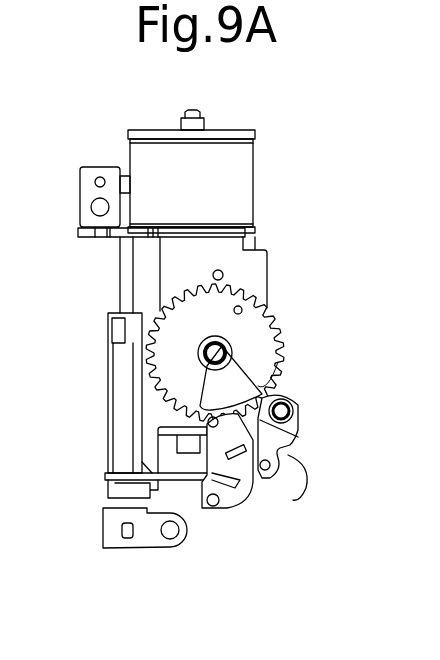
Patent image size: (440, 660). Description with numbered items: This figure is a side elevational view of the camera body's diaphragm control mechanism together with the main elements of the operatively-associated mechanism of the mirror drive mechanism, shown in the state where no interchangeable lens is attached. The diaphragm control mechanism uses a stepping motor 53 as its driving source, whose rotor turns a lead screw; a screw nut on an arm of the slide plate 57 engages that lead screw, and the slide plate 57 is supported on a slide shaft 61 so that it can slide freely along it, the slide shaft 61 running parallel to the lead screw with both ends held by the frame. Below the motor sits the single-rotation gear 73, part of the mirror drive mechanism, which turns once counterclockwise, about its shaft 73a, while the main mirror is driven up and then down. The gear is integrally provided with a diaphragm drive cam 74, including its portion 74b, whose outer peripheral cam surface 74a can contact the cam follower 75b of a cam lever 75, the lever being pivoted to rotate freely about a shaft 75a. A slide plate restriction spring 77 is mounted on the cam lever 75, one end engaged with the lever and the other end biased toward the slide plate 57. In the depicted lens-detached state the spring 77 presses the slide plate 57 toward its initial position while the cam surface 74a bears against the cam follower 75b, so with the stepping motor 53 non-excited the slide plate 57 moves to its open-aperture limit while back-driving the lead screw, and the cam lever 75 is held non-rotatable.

The stepping motor 53 is at (240, 178).
The slide shaft 61 is at (125, 280).
The slide plate 57 is at (107, 362).
The single-rotation gear 73 is at (252, 324).
The gear shaft 73a is at (217, 343).
The diaphragm drive cam 74 is at (237, 368).
The cam surface 74a is at (267, 483).
The lever engaging portion 74b is at (278, 362).
The cam lever 75 is at (273, 445).
The shaft 75a is at (293, 402).
The cam follower 75b is at (223, 490).
The slide plate restriction spring 77 is at (293, 473).